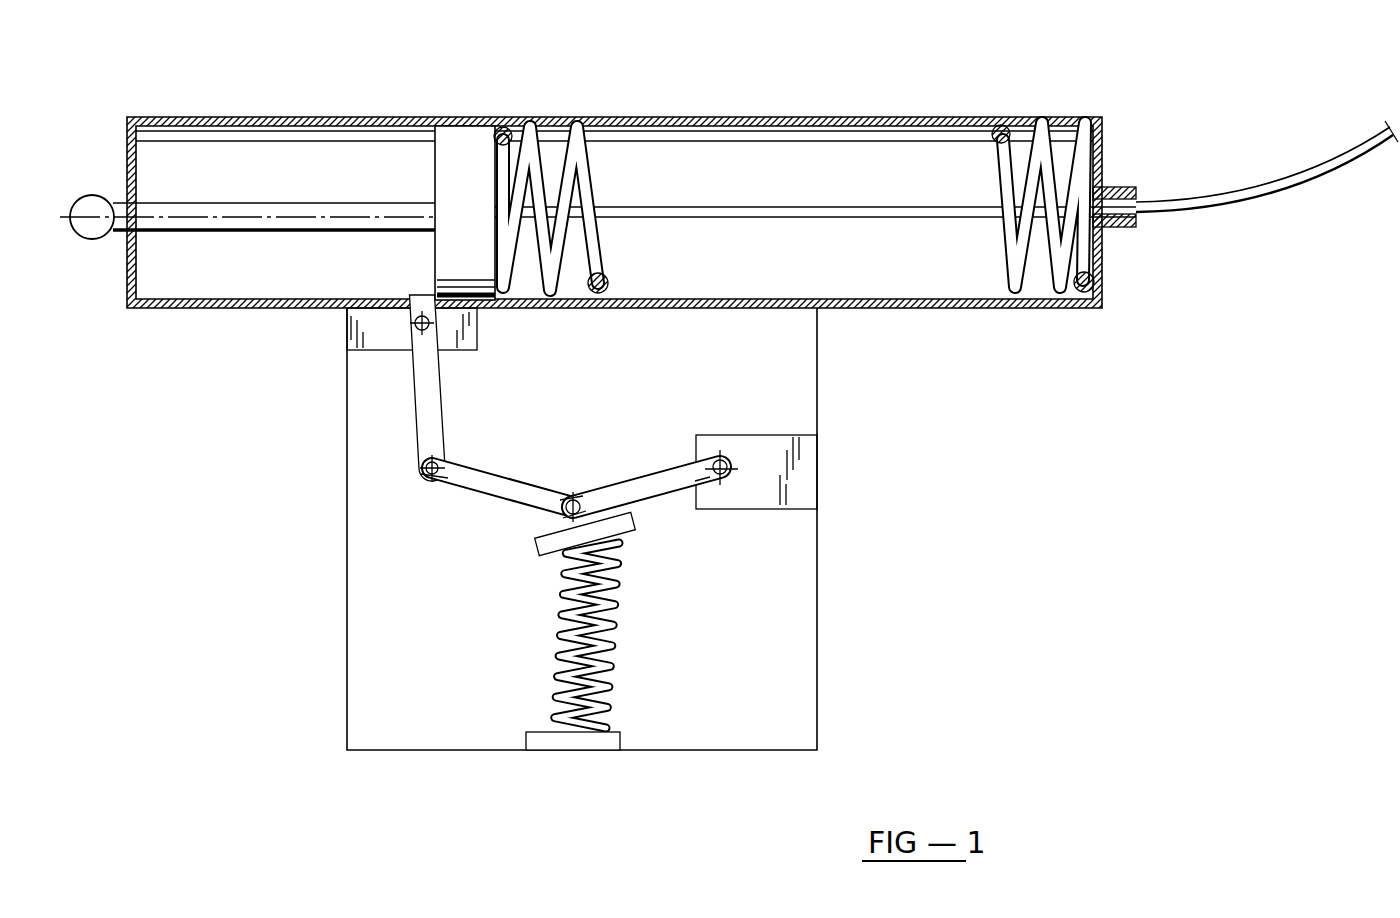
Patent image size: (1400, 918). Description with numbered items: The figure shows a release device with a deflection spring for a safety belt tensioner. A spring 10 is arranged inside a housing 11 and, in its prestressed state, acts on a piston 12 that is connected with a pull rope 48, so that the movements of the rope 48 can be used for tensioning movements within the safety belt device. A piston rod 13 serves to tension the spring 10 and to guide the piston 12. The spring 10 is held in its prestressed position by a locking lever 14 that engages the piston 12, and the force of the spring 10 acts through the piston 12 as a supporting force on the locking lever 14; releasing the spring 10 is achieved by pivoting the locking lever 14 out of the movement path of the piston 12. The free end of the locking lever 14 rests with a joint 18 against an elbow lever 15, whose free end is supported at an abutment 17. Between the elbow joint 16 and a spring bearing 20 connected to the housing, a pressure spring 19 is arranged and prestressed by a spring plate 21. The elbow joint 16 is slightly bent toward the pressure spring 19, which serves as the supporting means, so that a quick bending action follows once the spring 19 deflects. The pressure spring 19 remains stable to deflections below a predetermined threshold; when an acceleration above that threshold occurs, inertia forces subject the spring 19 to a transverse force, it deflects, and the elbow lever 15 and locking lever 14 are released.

The spring 10 is at (578, 140).
The housing 11 is at (744, 117).
The piston 12 is at (455, 145).
The piston rod 13 is at (275, 210).
The locking lever 14 is at (420, 368).
The elbow lever 15 is at (480, 483).
The elbow joint 16 is at (568, 518).
The abutment 17 is at (805, 460).
The joint 18 is at (424, 467).
The pressure spring 19 is at (615, 642).
The spring bearing 20 is at (567, 742).
The spring plate 21 is at (635, 527).
The pull rope 48 is at (1220, 195).